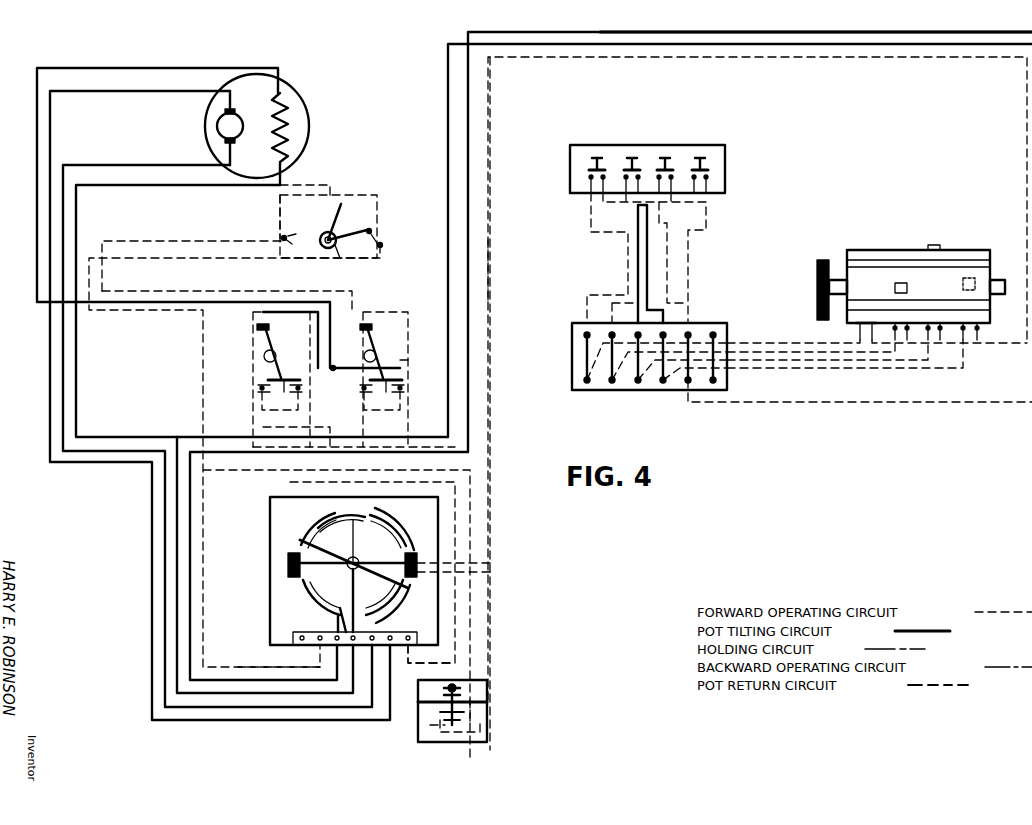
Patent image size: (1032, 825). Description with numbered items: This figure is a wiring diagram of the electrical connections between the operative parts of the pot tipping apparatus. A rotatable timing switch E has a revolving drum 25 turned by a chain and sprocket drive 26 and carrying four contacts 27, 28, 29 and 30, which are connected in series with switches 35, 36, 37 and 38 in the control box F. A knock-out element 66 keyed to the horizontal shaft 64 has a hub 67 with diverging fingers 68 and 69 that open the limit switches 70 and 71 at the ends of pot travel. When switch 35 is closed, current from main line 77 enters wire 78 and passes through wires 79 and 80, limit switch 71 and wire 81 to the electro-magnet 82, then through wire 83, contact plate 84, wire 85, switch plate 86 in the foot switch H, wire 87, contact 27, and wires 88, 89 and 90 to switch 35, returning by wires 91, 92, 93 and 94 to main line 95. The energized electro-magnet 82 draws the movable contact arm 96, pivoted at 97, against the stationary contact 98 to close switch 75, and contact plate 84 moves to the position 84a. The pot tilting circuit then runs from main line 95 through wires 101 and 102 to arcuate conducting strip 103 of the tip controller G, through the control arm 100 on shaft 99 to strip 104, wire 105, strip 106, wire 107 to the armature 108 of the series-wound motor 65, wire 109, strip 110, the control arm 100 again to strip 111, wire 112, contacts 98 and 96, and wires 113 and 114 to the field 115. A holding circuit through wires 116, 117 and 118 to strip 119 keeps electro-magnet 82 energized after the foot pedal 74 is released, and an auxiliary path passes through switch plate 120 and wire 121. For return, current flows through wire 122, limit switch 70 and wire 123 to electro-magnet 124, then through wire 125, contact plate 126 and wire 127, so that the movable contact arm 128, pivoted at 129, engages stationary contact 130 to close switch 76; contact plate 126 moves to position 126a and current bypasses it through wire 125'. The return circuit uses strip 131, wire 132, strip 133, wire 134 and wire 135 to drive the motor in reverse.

The wire 114 is at (37, 179).
The series-wound motor 65 is at (290, 100).
The field 115 is at (298, 112).
The armature 108 is at (217, 124).
The wire 109 is at (63, 352).
The wire 78 is at (448, 127).
The wire 101 is at (470, 320).
The wire 112 is at (345, 720).
The wire 123 is at (150, 228).
The wire 81 is at (150, 291).
The wire 79 is at (318, 184).
The wire 122 is at (280, 213).
The wire 80 is at (378, 215).
The knock-out element 66 is at (338, 223).
The hub 67 is at (322, 247).
The finger 68 is at (336, 213).
The finger 69 is at (360, 235).
The horizontal shaft 64 is at (333, 250).
The limit switch 70 is at (288, 240).
The limit switch 71 is at (382, 244).
The wire 85 is at (272, 470).
The wire 117 is at (305, 478).
The switch 75 is at (265, 358).
The movable contact arm 96 is at (278, 320).
The stationary contact 98 is at (257, 327).
The electro-magnet 82 is at (264, 356).
The pivot 97 is at (262, 344).
The contact plate position 84a is at (276, 378).
The contact plate 84 is at (257, 388).
The wire 83 is at (300, 386).
The wire 116 is at (262, 405).
The wire 113 is at (318, 352).
The wire 135 is at (334, 372).
The wire 127 is at (333, 430).
The switch 76 is at (391, 366).
The movable contact arm 128 is at (372, 324).
The stationary contact 130 is at (376, 335).
The electro-magnet 124 is at (364, 356).
The wire 125 is at (422, 361).
The pivot 129 is at (402, 384).
The contact plate 126 is at (362, 392).
The contact plate position 126a is at (404, 392).
The wire 125' is at (407, 412).
The tip controller G is at (268, 584).
The arcuate conducting strip 103 is at (356, 514).
The arcuate conducting strip 104 is at (327, 520).
The arcuate conducting strip 119 is at (386, 520).
The arcuate conducting strip 131 is at (410, 532).
The arcuate conducting strip 106 is at (316, 598).
The arcuate conducting strip 110 is at (384, 604).
The arcuate conducting strip 111 is at (392, 592).
The arcuate conducting strip 133 is at (332, 618).
The control arm 100 is at (305, 543).
The wire 105 is at (288, 562).
The horizontal shaft 99 is at (352, 556).
The wire 102 is at (358, 585).
The wire 118 is at (420, 558).
The wire 132 is at (420, 572).
The wire 107 is at (306, 645).
The wire 134 is at (238, 667).
The wire 121 is at (432, 663).
The foot switch H is at (420, 722).
The foot pedal 74 is at (458, 686).
The switch plate 120 is at (470, 712).
The switch plate 86 is at (452, 730).
The main line 77 is at (520, 57).
The main line 95 is at (918, 44).
The wire 87 is at (489, 268).
The control box F is at (722, 158).
The switch 35 is at (590, 163).
The switch 36 is at (632, 158).
The switch 37 is at (665, 158).
The switch 38 is at (700, 158).
The wire 90 is at (628, 255).
The wire 91 is at (690, 220).
The wire 92 is at (676, 300).
The wire 89 is at (575, 350).
The wire 93 is at (688, 368).
The wire 88 is at (780, 343).
The wire 94 is at (906, 402).
The rotatable timing switch E is at (905, 248).
The revolving cylindrical member or drum 25 is at (856, 258).
The contact 29 is at (935, 245).
The chain and sprocket drive 26 is at (817, 272).
The contact 30 is at (975, 278).
The contact 28 is at (907, 286).
The contact 27 is at (862, 320).